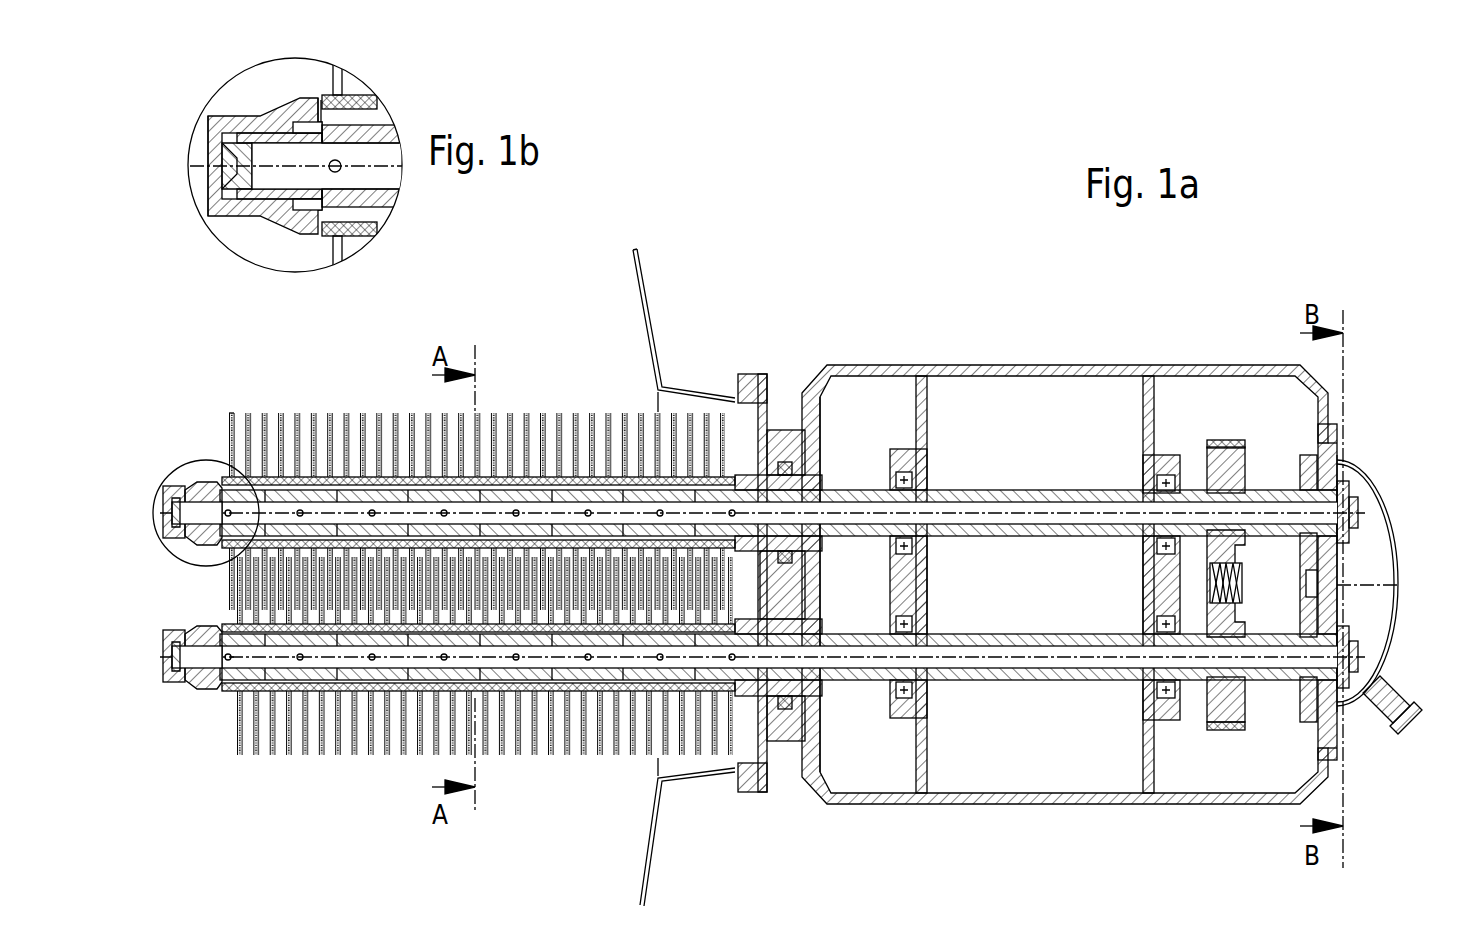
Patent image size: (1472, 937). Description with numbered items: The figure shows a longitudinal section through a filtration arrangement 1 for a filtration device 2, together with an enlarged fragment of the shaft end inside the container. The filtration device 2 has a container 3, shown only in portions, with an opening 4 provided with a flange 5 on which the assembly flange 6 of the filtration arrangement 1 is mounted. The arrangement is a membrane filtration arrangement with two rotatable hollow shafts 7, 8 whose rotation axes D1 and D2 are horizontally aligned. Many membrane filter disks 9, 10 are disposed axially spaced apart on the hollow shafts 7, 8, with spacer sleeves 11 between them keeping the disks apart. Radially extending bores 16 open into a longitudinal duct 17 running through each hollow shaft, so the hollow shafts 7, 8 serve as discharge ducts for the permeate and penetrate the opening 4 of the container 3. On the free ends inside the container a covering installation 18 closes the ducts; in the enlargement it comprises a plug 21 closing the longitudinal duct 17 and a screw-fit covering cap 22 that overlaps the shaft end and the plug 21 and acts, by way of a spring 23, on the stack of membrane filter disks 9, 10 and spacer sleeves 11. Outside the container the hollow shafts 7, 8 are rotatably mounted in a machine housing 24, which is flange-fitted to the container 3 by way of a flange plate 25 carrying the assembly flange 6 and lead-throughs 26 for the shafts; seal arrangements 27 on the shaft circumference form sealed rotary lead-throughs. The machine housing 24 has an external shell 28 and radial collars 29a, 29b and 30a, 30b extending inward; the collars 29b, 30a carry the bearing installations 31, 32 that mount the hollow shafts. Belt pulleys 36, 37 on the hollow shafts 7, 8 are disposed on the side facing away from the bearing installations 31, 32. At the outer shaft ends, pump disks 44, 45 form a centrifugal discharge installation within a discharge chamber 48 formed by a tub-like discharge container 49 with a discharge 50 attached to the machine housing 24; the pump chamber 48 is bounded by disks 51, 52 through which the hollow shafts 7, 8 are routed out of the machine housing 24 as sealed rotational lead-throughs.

In FIG. 1A, the filtration arrangement 1 is at (598, 765).
In FIG. 1A, the filtration device 2 is at (660, 315).
In FIG. 1A, the container 3 is at (641, 252).
In FIG. 1A, the opening 4 is at (746, 737).
In FIG. 1A, the flange 5 is at (748, 796).
In FIG. 1A, the assembly flange 6 is at (765, 704).
In FIG. 1A, the hollow shaft 7 is at (1033, 680).
In FIG. 1A, the hollow shaft 8 is at (969, 494).
In FIG. 1A, the membrane filter disk 9 is at (238, 752).
In FIG. 1B, the membrane filter disk 10 is at (345, 86).
In FIG. 1A, the membrane filter disk 10 is at (231, 412).
In FIG. 1B, the spacer sleeve 11 is at (357, 238).
In FIG. 1A, the radial bore 16 is at (327, 528).
In FIG. 1A, the longitudinal duct 17 is at (530, 515).
In FIG. 1B, the covering installation 18 is at (198, 156).
In FIG. 1B, the plug 21 is at (236, 178).
In FIG. 1B, the covering cap 22 is at (256, 118).
In FIG. 1B, the spring 23 is at (312, 99).
In FIG. 1A, the machine housing 24 is at (1158, 360).
In FIG. 1A, the flange plate 25 is at (772, 443).
In FIG. 1A, the lead-through 26 is at (782, 712).
In FIG. 1A, the seal arrangement 27 is at (785, 470).
In FIG. 1A, the external shell 28 is at (928, 372).
In FIG. 1A, the radial collar 29a is at (816, 756).
In FIG. 1A, the radial collar 29b is at (925, 780).
In FIG. 1A, the radial collar 30a is at (1149, 780).
In FIG. 1A, the radial collar 30b is at (1332, 760).
In FIG. 1A, the bearing installation 31 is at (906, 450).
In FIG. 1A, the bearing installation 32 is at (1174, 450).
In FIG. 1A, the belt pulley 36 is at (1220, 715).
In FIG. 1A, the belt pulley 37 is at (1258, 470).
In FIG. 1A, the pump disk 44 is at (1350, 633).
In FIG. 1A, the pump disk 45 is at (1350, 482).
In FIG. 1A, the discharge chamber 48 is at (1364, 548).
In FIG. 1A, the discharge container 49 is at (1397, 558).
In FIG. 1A, the discharge 50 is at (1375, 690).
In FIG. 1A, the disk 51 is at (1303, 690).
In FIG. 1A, the disk 52 is at (1330, 437).
In FIG. 1A, the rotation axis D1 is at (236, 660).
In FIG. 1A, the rotation axis D2 is at (195, 515).